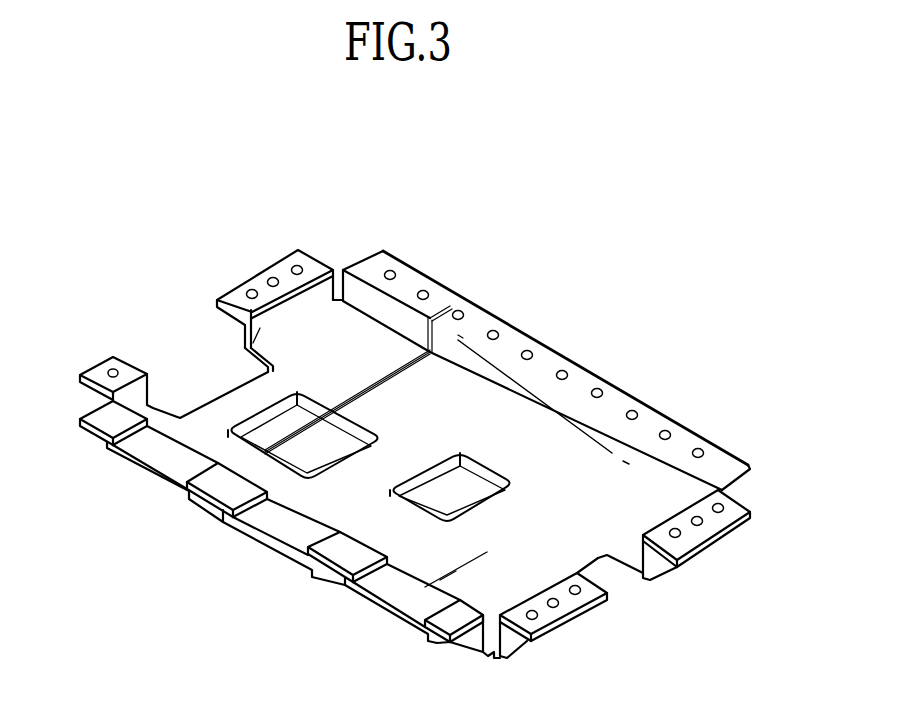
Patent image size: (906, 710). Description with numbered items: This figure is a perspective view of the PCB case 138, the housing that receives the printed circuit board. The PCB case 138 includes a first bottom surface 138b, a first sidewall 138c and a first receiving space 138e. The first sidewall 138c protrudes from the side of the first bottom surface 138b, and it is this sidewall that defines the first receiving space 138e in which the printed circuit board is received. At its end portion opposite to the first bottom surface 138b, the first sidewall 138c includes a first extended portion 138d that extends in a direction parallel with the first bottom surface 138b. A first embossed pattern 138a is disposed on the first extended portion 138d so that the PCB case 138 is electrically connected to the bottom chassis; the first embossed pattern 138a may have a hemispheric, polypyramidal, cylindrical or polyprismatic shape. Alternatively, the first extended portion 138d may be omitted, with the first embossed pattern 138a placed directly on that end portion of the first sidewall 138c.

The PCB case 138 is at (525, 154).
The first embossed pattern 138a is at (597, 390).
The first bottom surface 138b is at (363, 337).
The first sidewall 138c is at (254, 350).
The first extended portion 138d is at (256, 286).
The first receiving space 138e is at (447, 414).